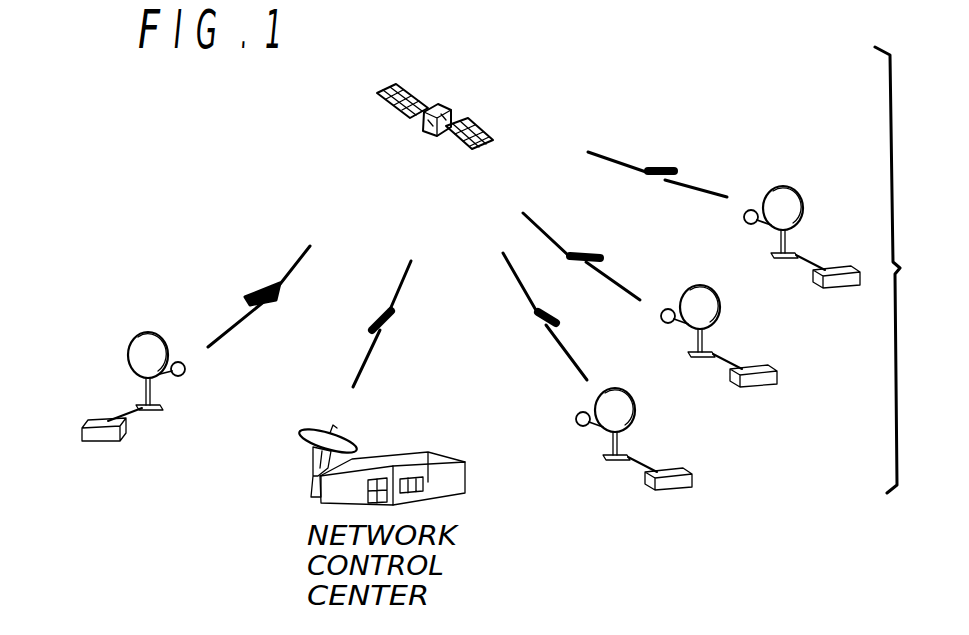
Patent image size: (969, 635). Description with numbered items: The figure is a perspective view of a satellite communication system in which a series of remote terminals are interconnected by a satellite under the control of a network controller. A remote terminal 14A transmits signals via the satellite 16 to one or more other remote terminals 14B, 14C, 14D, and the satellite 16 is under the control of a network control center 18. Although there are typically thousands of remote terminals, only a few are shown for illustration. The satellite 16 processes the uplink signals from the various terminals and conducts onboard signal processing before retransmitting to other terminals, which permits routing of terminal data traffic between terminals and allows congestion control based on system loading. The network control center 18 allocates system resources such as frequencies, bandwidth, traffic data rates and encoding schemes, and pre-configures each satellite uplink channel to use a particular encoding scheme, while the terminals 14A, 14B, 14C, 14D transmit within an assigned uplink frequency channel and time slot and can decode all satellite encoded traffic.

The satellite 16 is at (452, 105).
The network control center 18 is at (405, 453).
The remote terminal 14A is at (106, 424).
The remote terminal 14B is at (650, 474).
The remote terminal 14C is at (738, 371).
The remote terminal 14D is at (811, 268).